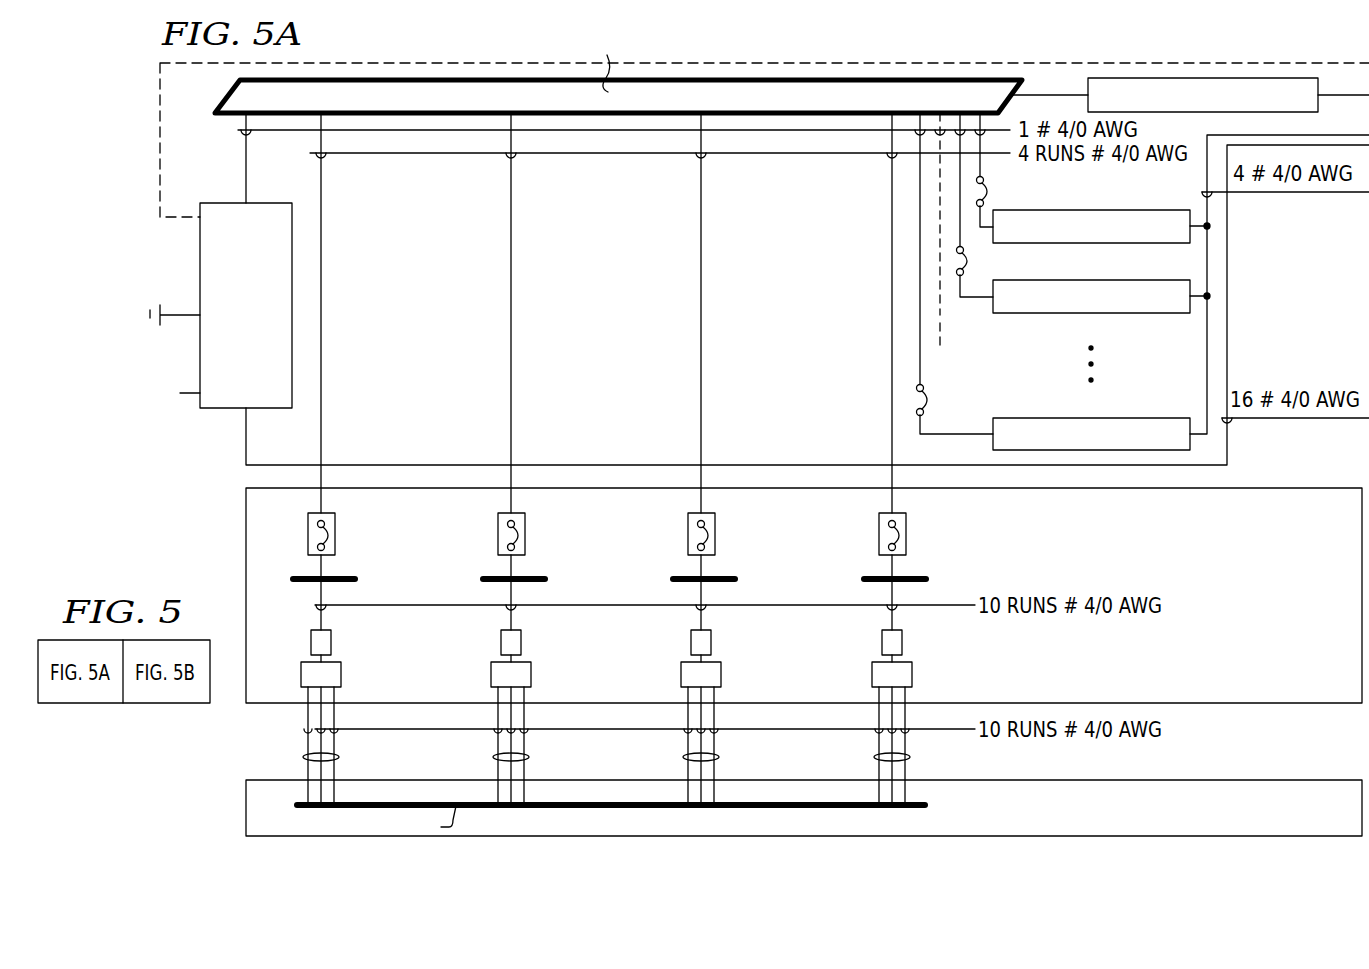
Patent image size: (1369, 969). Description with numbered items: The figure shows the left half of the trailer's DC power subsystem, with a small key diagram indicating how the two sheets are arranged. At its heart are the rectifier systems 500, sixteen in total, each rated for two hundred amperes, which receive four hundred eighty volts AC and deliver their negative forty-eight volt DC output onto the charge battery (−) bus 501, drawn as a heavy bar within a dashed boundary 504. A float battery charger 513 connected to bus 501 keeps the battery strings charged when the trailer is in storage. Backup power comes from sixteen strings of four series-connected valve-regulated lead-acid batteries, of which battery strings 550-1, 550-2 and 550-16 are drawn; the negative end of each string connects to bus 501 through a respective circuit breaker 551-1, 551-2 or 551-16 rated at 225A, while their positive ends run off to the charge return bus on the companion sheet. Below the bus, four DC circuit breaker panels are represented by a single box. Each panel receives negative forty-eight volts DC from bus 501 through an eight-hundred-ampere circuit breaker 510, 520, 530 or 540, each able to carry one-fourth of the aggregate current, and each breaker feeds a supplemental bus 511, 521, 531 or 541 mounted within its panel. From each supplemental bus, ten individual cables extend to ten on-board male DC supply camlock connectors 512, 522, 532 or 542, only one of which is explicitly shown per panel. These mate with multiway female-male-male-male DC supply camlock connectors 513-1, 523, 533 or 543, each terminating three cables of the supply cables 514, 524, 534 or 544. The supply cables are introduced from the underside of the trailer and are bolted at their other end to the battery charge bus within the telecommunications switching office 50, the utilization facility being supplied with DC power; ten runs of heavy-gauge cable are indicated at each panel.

The telecommunications switching office 50 is at (1293, 778).
The charge battery (−) bus 501 is at (230, 101).
The charge battery (negative) 504 is at (1003, 63).
The float battery charger 513 is at (1088, 90).
The rectifier system 500 is at (200, 250).
The 225A circuit breaker 225A is at (976, 264).
The circuit breaker 551-1 is at (988, 192).
The battery string 550-1 is at (1122, 210).
The circuit breaker 551-2 is at (968, 262).
The battery string 550-2 is at (1118, 280).
The circuit breaker 551-16 is at (928, 401).
The battery string 550-16 is at (1105, 418).
The circuit breaker 510 is at (335, 538).
The supplemental bus 511 is at (352, 577).
The male DC supply camlock connector 512 is at (385, 642).
The female DC supply camlock connector 513-1 is at (387, 675).
The supply cables 514 is at (303, 757).
The circuit breaker 520 is at (525, 538).
The supplemental bus 521 is at (542, 577).
The male DC supply camlock connector 522 is at (575, 642).
The female DC supply camlock connector 523 is at (577, 675).
The supply cables 524 is at (493, 757).
The circuit breaker 530 is at (715, 538).
The supplemental bus 531 is at (732, 577).
The male DC supply camlock connector 532 is at (765, 642).
The female DC supply camlock connector 533 is at (767, 675).
The supply cables 534 is at (719, 757).
The circuit breaker 540 is at (906, 538).
The supplemental bus 541 is at (923, 577).
The male DC supply camlock connector 542 is at (956, 642).
The female DC supply camlock connector 543 is at (958, 675).
The supply cables 544 is at (910, 757).